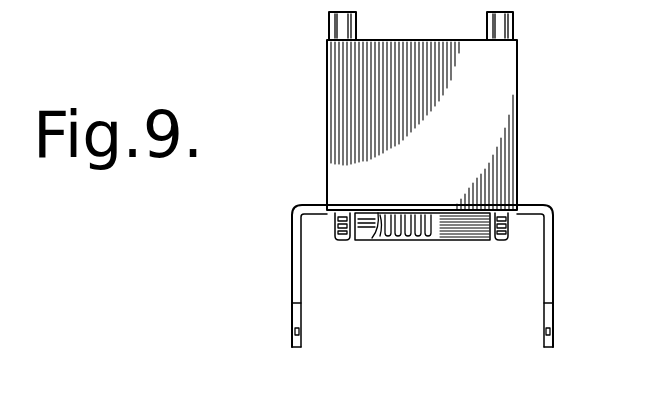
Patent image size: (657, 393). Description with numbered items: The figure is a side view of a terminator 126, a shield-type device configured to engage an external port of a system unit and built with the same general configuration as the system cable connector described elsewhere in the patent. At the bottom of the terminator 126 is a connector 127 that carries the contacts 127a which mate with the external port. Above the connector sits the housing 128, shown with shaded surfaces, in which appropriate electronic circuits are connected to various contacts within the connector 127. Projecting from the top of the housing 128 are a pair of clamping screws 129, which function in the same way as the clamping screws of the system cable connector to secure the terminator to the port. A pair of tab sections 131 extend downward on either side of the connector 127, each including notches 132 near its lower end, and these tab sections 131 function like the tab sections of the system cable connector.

The terminator 126 is at (516, 78).
The connector 127 is at (452, 240).
The contacts 127a is at (370, 238).
The housing 128 is at (517, 146).
The clamping screws 129 is at (329, 28).
The tab sections 131 is at (293, 262).
The notches 132 is at (293, 325).